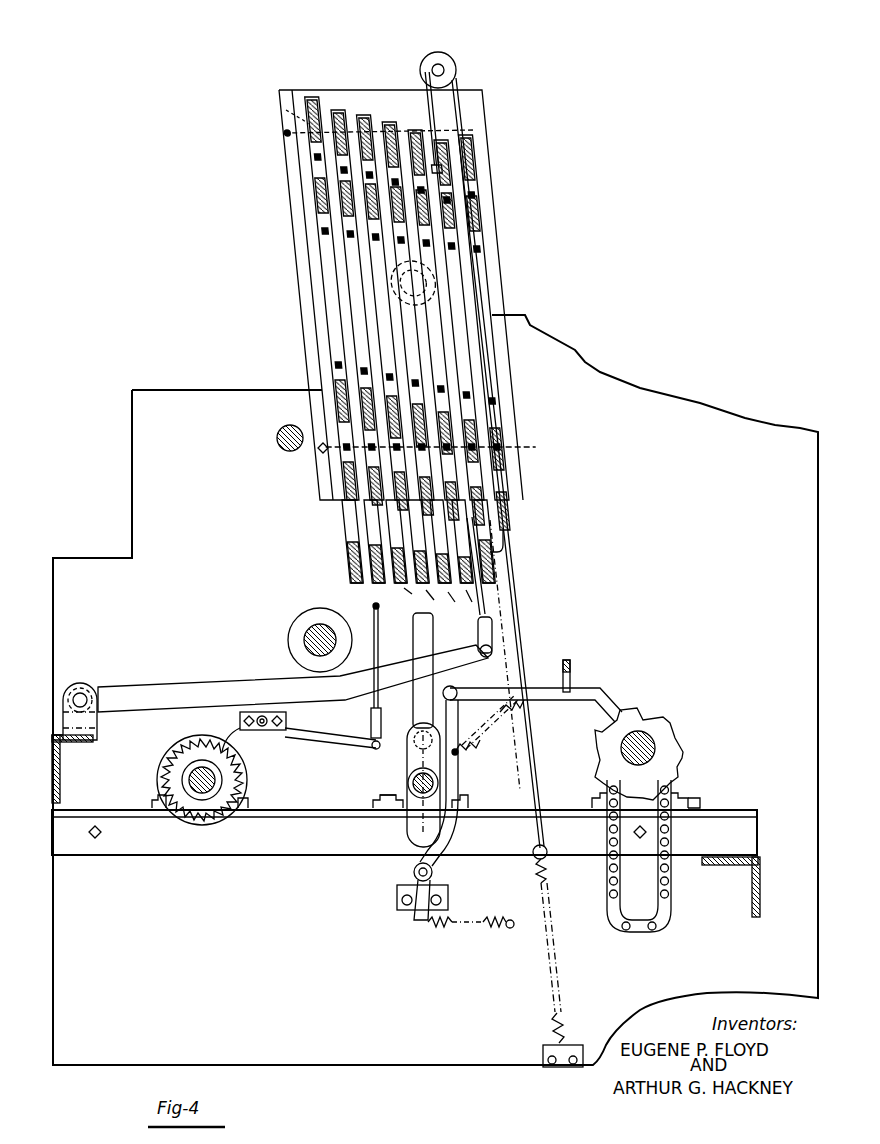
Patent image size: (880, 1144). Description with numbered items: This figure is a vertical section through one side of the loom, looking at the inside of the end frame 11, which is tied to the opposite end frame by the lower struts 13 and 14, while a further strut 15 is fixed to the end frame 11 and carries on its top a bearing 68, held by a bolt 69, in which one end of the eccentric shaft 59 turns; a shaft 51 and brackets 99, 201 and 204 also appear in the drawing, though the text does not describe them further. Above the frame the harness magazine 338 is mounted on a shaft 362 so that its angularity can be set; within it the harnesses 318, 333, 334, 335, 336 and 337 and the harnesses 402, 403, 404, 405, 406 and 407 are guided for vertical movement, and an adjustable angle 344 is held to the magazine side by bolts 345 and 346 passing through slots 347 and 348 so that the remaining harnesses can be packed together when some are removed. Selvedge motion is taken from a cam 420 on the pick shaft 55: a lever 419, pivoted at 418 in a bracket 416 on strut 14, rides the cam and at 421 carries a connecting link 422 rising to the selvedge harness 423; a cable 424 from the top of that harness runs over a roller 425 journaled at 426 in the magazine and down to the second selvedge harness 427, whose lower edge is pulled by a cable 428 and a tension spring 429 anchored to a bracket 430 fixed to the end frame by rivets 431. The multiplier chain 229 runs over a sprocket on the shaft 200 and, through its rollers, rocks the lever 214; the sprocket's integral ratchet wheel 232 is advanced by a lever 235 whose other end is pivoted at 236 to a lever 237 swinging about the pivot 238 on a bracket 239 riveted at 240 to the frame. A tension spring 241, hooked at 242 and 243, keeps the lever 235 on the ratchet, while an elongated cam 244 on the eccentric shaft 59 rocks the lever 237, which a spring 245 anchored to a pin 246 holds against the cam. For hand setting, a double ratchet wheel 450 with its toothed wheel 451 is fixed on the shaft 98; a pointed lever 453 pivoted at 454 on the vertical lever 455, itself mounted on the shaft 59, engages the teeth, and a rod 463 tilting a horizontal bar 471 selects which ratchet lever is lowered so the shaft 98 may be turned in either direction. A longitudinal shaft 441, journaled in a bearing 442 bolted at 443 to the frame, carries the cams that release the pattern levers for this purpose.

The end frame 11 is at (725, 412).
The strut 13 is at (760, 888).
The strut 14 is at (60, 768).
The strut 15 is at (282, 856).
The shaft 51 is at (277, 440).
The pick shaft 55 is at (318, 624).
The eccentric shaft 59 is at (408, 781).
The bearing 68 is at (373, 804).
The bolt 69 is at (385, 794).
The shaft 98 is at (196, 790).
The bracket 99 is at (250, 803).
The shaft 200 is at (644, 740).
The bracket 201 is at (700, 802).
The chain guide 204 is at (600, 796).
The lever 214 is at (567, 660).
The multiplier chain 229 is at (672, 890).
The ratchet wheel 232 is at (665, 718).
The lever 235 is at (582, 690).
The pivot 236 is at (457, 690).
The lever 237 is at (460, 840).
The pivot 238 is at (414, 870).
The bracket 239 is at (397, 890).
The rivets 240 is at (398, 905).
The tension spring 241 is at (486, 742).
The spring attachment 242 is at (462, 756).
The spring attachment 243 is at (522, 696).
The elongated cam 244 is at (407, 832).
The tension spring 245 is at (440, 926).
The pin 246 is at (505, 928).
The harness 318 is at (375, 372).
The harness 333 is at (312, 281).
The harness 334 is at (359, 296).
The harness 335 is at (369, 288).
The harness 336 is at (396, 301).
The harness 337 is at (421, 292).
The magazine 338 is at (508, 332).
The adjustable angle 344 is at (300, 278).
The bolt 345 is at (360, 132).
The bolt 346 is at (320, 447).
The slot 347 is at (277, 112).
The slot 348 is at (416, 464).
The shaft 362 is at (460, 283).
The harness 402 is at (416, 585).
The harness 403 is at (440, 590).
The harness 404 is at (458, 598).
The harness 405 is at (454, 590).
The harness 406 is at (486, 612).
The harness 407 is at (505, 552).
The bracket 416 is at (85, 694).
The pivot 418 is at (78, 688).
The lever 419 is at (160, 692).
The cam 420 is at (290, 645).
The pivot 421 is at (480, 652).
The connecting link 422 is at (478, 636).
The selvedge harness 423 is at (447, 122).
The cable 424 is at (462, 86).
The roller 425 is at (436, 52).
The roller mounting 426 is at (445, 66).
The second selvedge harness 427 is at (494, 323).
The cable 428 is at (508, 530).
The tension spring 429 is at (552, 876).
The bracket 430 is at (567, 1030).
The bolts or rivets 431 is at (543, 1058).
The longitudinal shaft 441 is at (262, 734).
The bearing 442 is at (286, 722).
The bolts 443 is at (262, 712).
The ratchet wheel 450 is at (165, 745).
The ratchet wheel 451 is at (182, 778).
The pointed lever 453 is at (322, 748).
The pivot 454 is at (398, 748).
The lever 455 is at (413, 641).
The rod 463 is at (374, 625).
The bar 471 is at (370, 742).